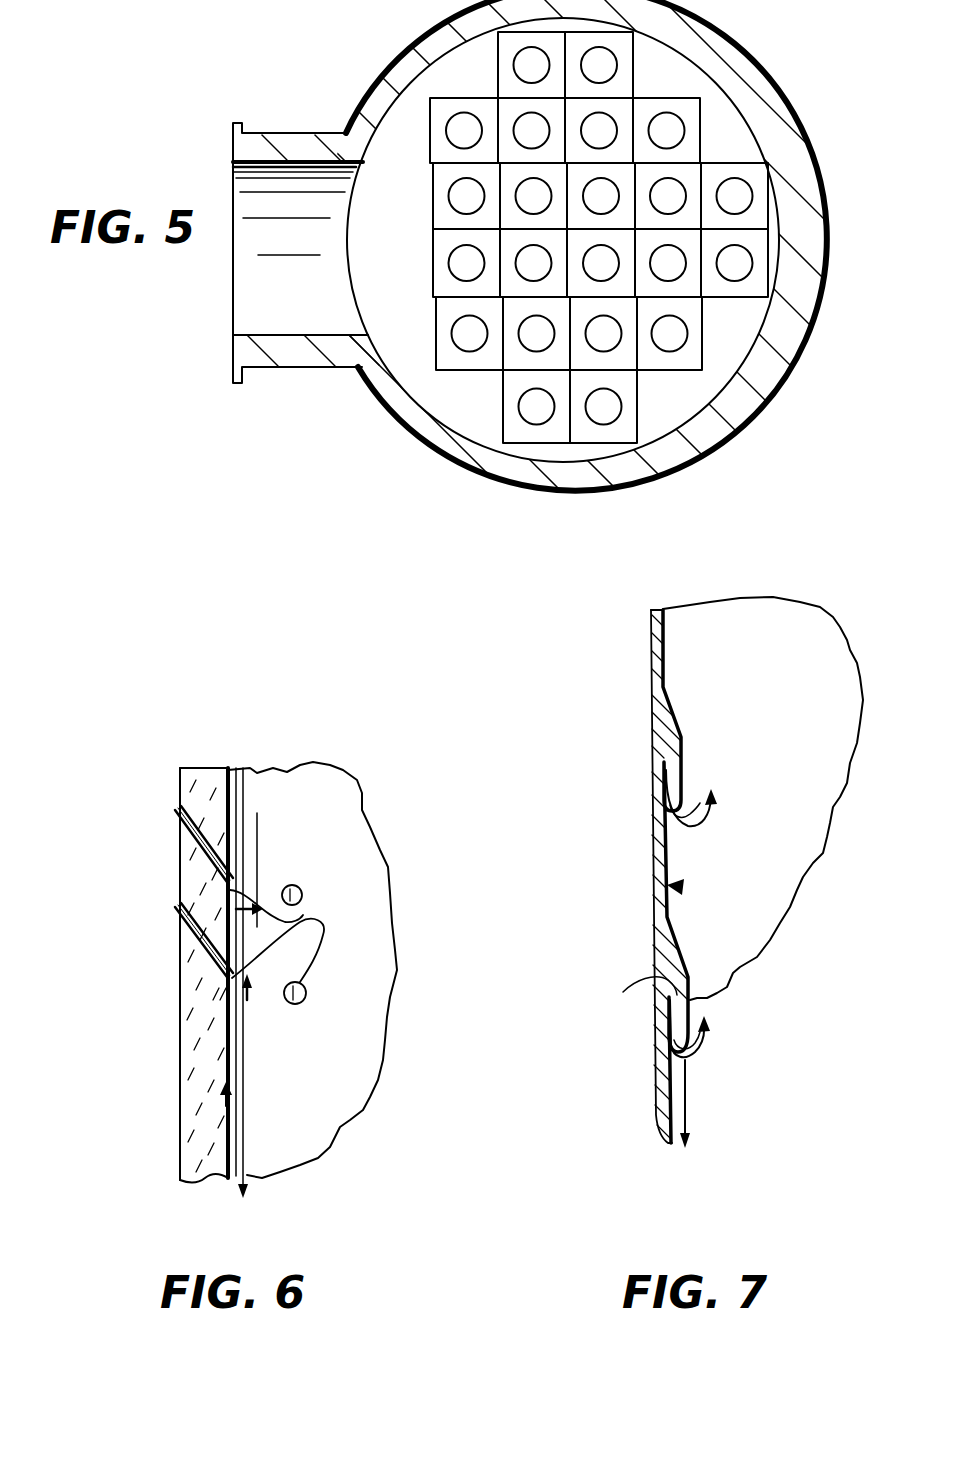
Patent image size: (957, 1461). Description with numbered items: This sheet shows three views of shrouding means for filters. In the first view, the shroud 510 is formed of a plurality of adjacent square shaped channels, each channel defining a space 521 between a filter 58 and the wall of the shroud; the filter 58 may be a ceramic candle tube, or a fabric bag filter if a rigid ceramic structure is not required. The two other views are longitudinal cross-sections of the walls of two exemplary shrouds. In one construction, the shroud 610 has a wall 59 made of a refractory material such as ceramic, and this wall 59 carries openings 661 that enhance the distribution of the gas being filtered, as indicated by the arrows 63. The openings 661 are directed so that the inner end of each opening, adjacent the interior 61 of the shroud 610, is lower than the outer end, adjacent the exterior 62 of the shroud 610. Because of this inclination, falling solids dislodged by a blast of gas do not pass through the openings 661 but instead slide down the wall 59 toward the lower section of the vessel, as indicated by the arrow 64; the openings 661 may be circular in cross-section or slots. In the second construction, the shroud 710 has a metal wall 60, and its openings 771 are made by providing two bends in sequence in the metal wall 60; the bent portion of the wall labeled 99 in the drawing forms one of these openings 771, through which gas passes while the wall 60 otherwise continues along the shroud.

In FIG. 5, the space 521 is at (690, 108).
In FIG. 5, the filter 58 is at (750, 202).
In FIG. 5, the shroud 510 is at (703, 333).
In FIG. 6, the wall 59 is at (220, 782).
In FIG. 6, the arrows 63 is at (180, 816).
In FIG. 6, the openings 661 is at (300, 887).
In FIG. 6, the exterior 62 is at (170, 1005).
In FIG. 6, the interior 61 is at (349, 1011).
In FIG. 6, the shroud 610 is at (229, 1096).
In FIG. 6, the arrow 64 is at (248, 1168).
In FIG. 7, the wall 60 is at (803, 673).
In FIG. 7, the louver wall 99 is at (664, 778).
In FIG. 7, the openings 771 is at (783, 806).
In FIG. 7, the shroud 710 is at (680, 890).